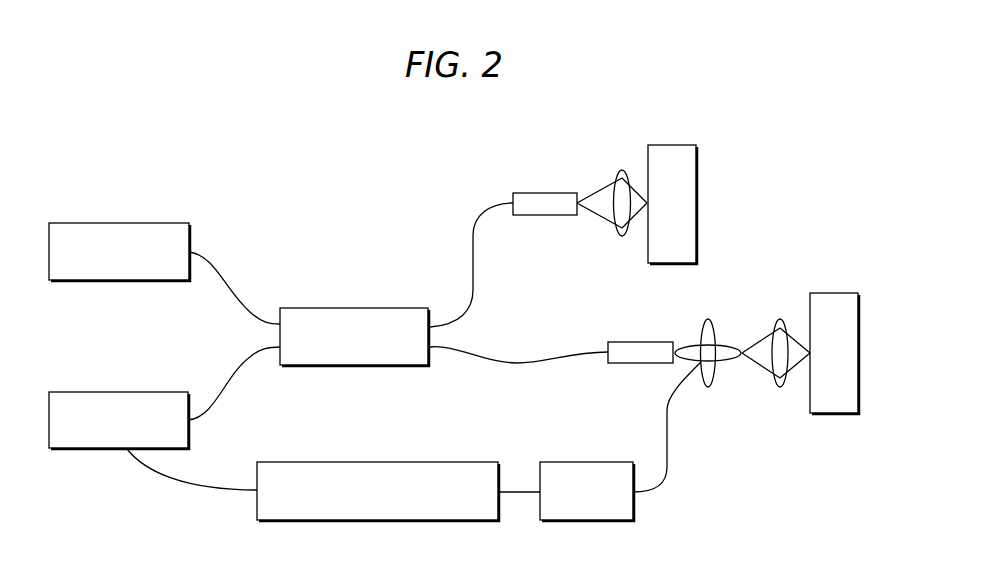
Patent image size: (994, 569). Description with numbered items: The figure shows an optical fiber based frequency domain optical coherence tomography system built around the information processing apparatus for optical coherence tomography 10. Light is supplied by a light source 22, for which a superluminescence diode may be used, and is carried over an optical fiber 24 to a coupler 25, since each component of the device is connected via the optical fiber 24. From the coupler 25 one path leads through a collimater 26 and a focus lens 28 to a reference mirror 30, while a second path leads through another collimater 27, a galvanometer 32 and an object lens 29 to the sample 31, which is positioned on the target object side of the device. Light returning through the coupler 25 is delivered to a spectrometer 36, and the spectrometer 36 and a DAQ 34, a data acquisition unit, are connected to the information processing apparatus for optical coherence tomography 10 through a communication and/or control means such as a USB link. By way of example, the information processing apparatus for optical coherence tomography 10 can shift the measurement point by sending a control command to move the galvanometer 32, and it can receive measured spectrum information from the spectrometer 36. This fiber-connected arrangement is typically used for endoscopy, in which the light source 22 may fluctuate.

The information processing apparatus for optical coherence tomography 10 is at (470, 461).
The light source 22 is at (162, 222).
The optical fiber 24 is at (213, 259).
The coupler 25 is at (402, 307).
The collimater 26 is at (552, 192).
The collimater 27 is at (652, 341).
The focus lens 28 is at (622, 170).
The object lens 29 is at (778, 318).
The reference mirror 30 is at (672, 144).
The sample 31 is at (835, 292).
The galvanometer 32 is at (708, 320).
The DAQ 34 is at (605, 461).
The spectrometer 36 is at (162, 391).